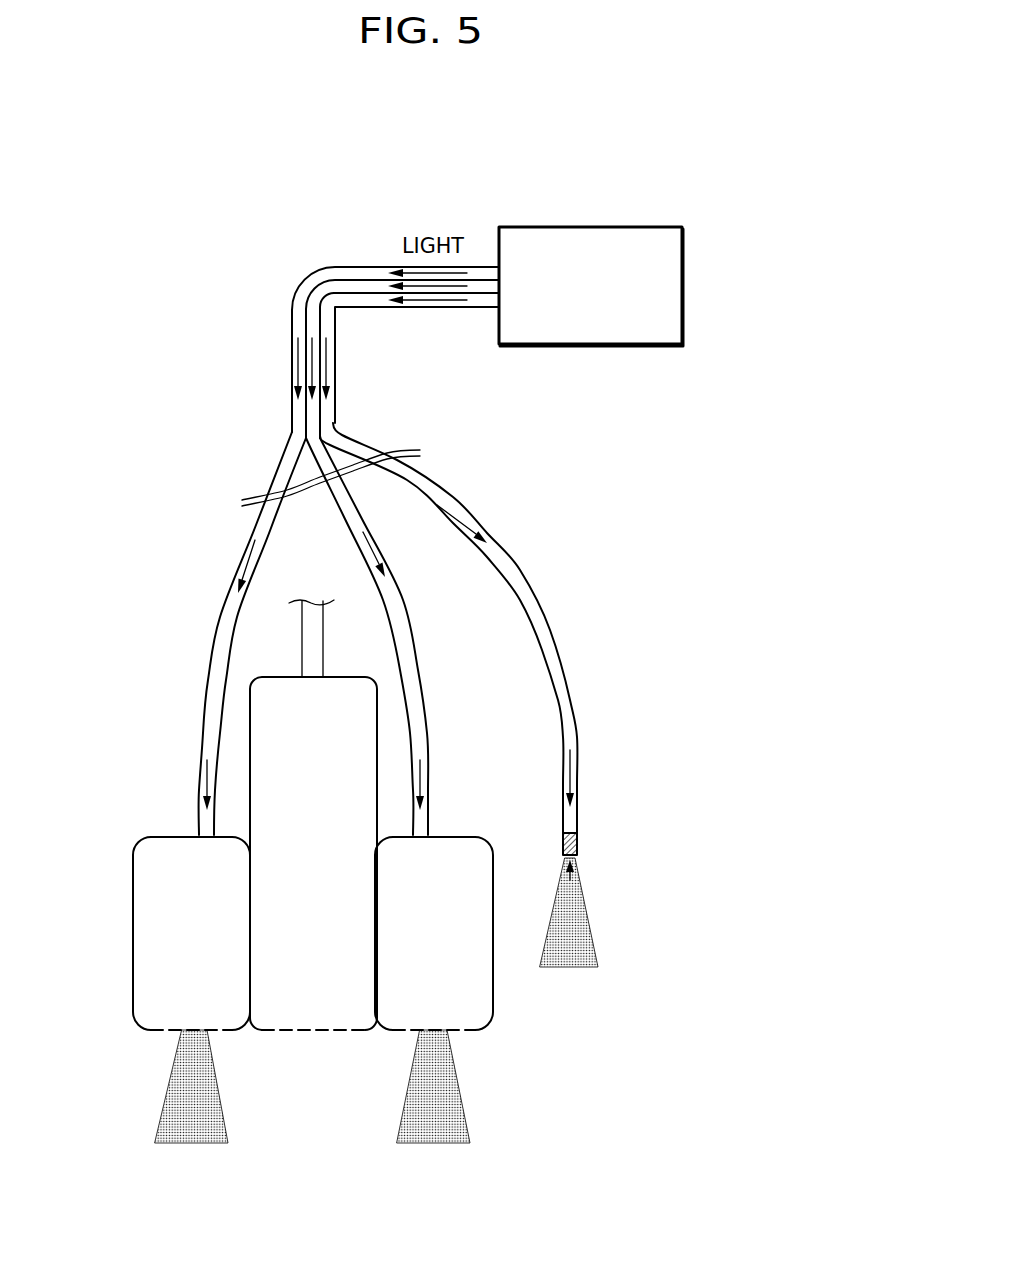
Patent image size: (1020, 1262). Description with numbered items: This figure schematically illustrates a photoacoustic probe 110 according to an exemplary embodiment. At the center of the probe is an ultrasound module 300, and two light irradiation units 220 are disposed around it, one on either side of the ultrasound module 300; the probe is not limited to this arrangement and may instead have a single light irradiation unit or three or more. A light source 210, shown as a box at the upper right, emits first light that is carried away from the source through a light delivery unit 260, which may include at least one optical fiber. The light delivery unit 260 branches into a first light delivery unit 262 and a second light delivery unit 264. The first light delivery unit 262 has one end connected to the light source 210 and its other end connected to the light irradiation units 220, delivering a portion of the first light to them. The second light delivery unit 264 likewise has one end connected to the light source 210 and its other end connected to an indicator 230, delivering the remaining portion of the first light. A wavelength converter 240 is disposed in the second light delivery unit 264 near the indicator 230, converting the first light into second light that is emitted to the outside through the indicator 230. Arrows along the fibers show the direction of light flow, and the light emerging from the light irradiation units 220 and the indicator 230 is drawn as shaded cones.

The photoacoustic probe 110 is at (697, 196).
The light source 210 is at (592, 227).
The light irradiation unit 220 is at (133, 966).
The indicator 230 is at (570, 873).
The wavelength converter 240 is at (578, 843).
The light delivery unit 260 is at (602, 546).
The first light delivery unit 262 is at (420, 665).
The second light delivery unit 264 is at (532, 586).
The ultrasound module 300 is at (308, 1012).